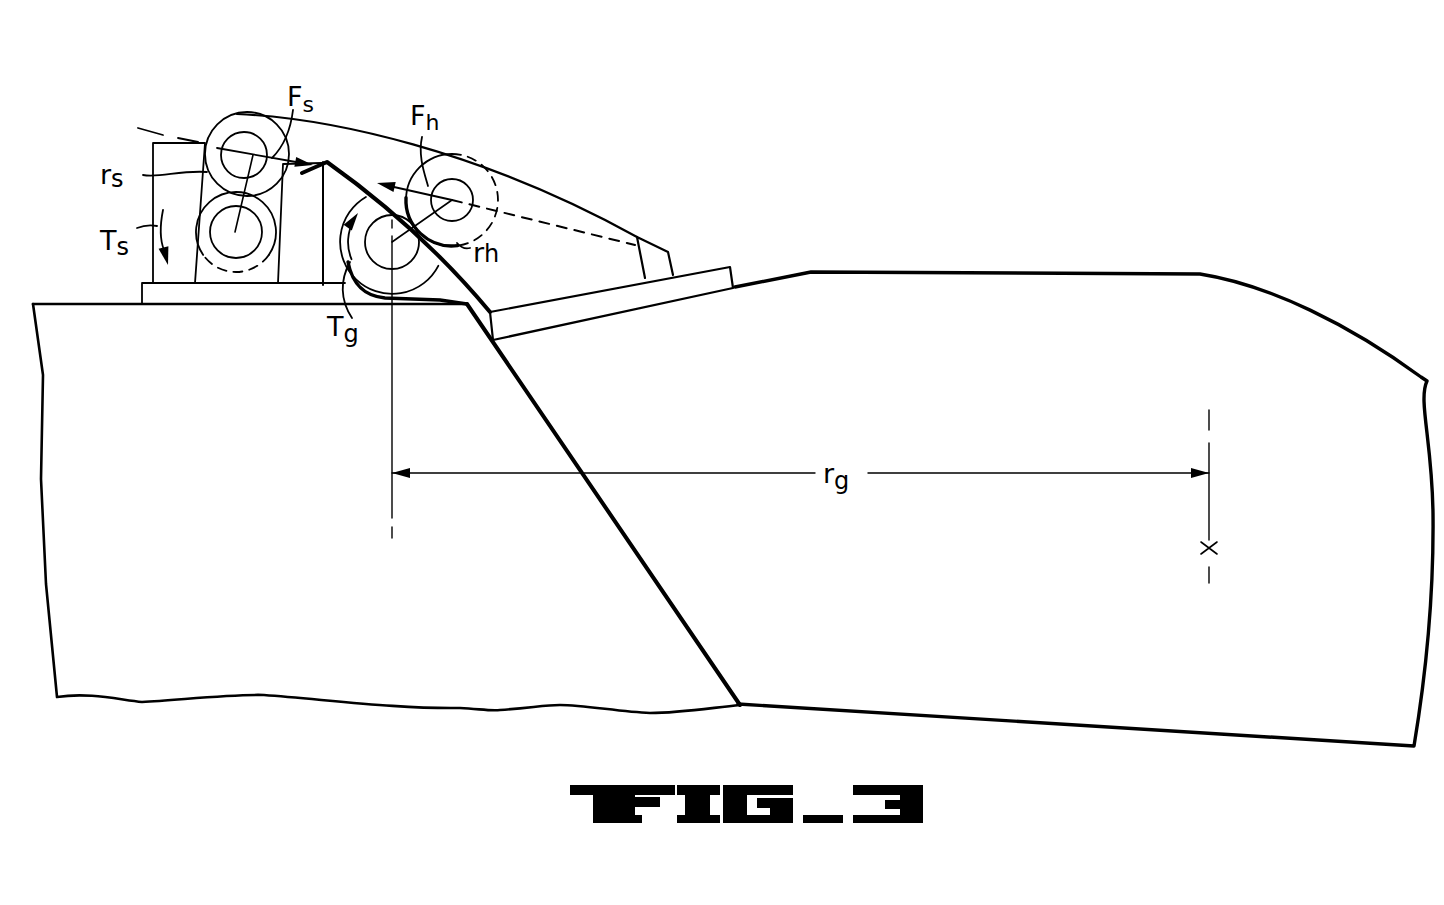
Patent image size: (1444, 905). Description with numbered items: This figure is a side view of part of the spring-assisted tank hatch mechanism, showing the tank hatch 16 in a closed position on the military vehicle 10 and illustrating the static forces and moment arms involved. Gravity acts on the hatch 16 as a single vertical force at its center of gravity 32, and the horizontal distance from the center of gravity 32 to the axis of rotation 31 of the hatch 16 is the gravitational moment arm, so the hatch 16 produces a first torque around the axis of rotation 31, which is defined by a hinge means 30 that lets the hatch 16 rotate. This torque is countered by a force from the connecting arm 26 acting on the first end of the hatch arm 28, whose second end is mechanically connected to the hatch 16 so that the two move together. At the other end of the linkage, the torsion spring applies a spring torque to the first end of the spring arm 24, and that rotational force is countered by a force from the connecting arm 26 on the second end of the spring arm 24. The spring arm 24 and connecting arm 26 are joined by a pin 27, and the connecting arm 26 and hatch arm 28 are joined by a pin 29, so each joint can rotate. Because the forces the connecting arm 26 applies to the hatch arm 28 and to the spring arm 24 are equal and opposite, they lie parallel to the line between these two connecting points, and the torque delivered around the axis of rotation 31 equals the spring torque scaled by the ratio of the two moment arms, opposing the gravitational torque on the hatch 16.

The military vehicle 10 is at (238, 566).
The tank hatch 16 is at (1076, 356).
The spring arm 24 is at (245, 150).
The connecting arm 26 is at (342, 130).
The pin 27 is at (205, 140).
The hatch arm 28 is at (530, 198).
The pin 29 is at (457, 192).
The hinge means 30 is at (590, 218).
The axis of rotation 31 is at (395, 247).
The center of gravity 32 is at (1222, 548).